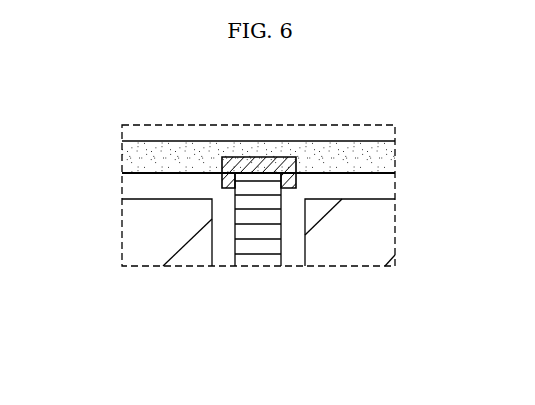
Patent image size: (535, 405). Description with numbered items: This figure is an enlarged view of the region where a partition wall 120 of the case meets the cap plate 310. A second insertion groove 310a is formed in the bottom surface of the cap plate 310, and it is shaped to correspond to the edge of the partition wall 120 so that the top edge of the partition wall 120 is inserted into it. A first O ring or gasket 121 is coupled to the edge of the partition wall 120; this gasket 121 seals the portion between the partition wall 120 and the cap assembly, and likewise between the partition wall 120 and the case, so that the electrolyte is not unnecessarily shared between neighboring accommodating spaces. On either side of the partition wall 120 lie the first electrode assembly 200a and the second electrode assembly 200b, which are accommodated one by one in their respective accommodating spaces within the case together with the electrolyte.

The cap plate 310 is at (343, 147).
The second insertion groove 310a is at (228, 178).
The first O ring or gasket 121 is at (277, 156).
The partition wall 120 is at (259, 250).
The first electrode assembly 200a is at (138, 239).
The second electrode assembly 200b is at (377, 240).